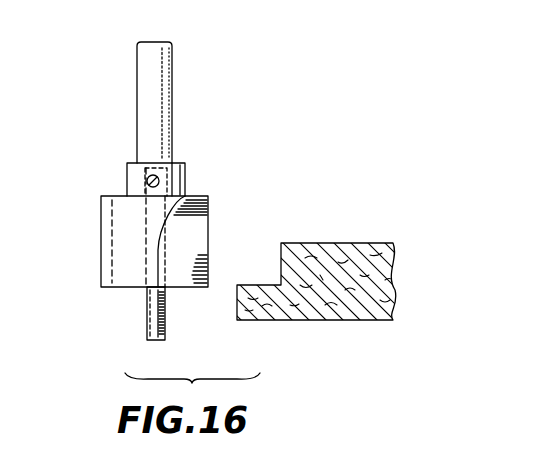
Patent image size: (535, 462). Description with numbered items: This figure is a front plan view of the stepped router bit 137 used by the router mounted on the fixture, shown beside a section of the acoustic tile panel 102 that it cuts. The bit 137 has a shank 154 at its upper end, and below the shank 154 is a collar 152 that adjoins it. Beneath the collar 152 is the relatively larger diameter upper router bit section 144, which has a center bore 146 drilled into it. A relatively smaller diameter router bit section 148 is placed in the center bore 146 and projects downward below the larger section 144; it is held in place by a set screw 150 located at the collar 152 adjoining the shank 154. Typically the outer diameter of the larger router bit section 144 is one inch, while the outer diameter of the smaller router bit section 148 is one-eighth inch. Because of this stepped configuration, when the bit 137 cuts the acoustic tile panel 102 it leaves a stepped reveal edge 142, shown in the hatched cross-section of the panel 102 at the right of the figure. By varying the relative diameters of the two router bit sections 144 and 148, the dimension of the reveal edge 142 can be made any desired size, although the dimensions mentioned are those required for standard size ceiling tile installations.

The stepped router bit 137 is at (100, 193).
The shank 154 is at (163, 78).
The collar 152 is at (127, 163).
The set screw 150 is at (162, 176).
The upper router bit section 144 is at (190, 208).
The center bore 146 is at (143, 243).
The smaller router bit section 148 is at (146, 318).
The reveal edge 142 is at (255, 290).
The acoustic tile panel 102 is at (318, 258).